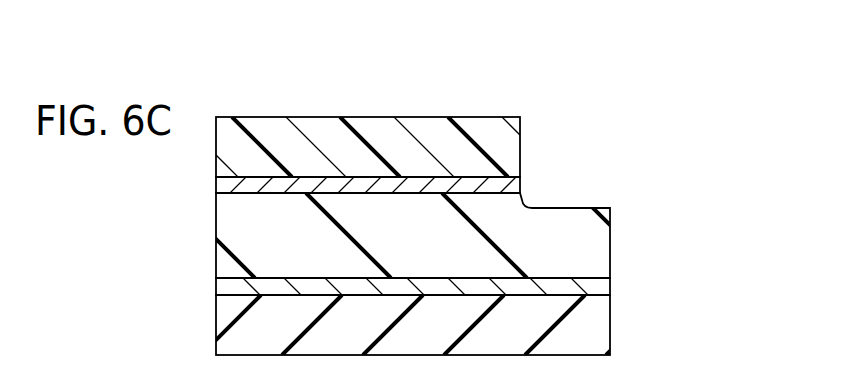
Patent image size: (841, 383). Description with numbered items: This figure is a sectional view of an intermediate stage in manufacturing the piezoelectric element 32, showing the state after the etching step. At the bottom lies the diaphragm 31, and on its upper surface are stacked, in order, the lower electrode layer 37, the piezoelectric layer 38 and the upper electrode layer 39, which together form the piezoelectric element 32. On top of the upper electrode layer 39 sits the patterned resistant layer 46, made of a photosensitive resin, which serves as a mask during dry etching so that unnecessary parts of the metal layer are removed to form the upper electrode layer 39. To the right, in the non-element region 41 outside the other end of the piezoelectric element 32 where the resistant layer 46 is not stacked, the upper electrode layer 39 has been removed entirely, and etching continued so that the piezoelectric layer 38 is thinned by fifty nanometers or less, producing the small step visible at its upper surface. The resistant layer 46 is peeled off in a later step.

The non-element region 41 is at (547, 87).
The resistant layer 46 is at (507, 153).
The piezoelectric element 32 is at (725, 145).
The upper electrode layer 39 is at (513, 186).
The piezoelectric layer 38 is at (598, 242).
The lower electrode layer 37 is at (600, 283).
The diaphragm 31 is at (605, 335).